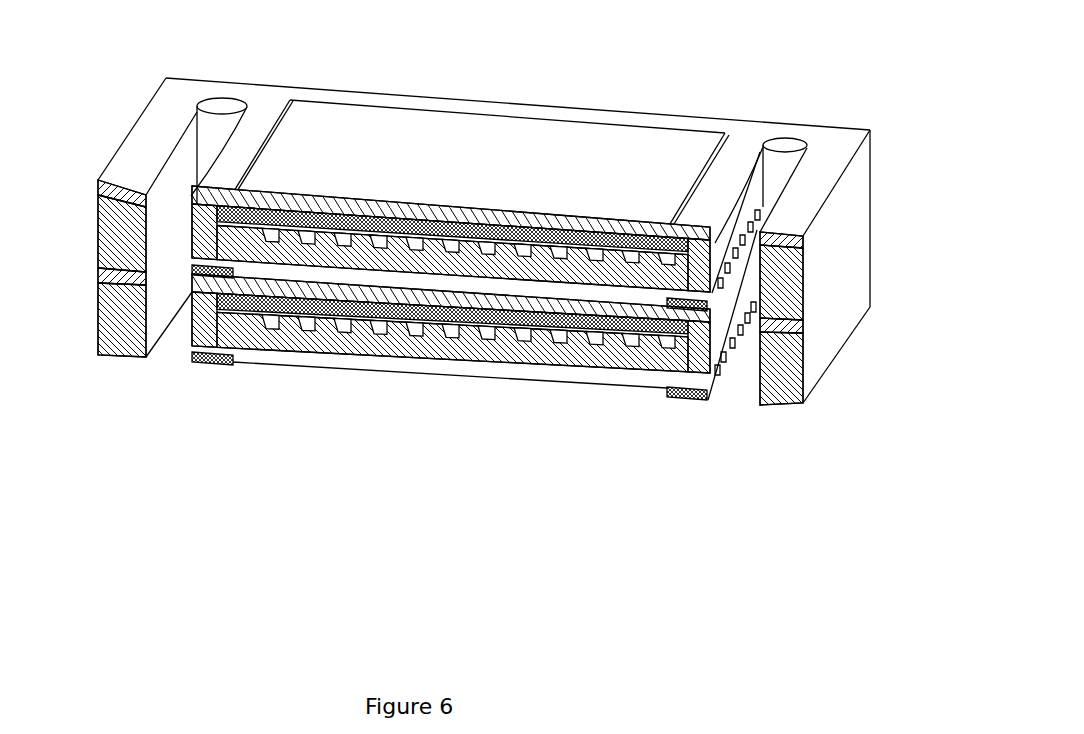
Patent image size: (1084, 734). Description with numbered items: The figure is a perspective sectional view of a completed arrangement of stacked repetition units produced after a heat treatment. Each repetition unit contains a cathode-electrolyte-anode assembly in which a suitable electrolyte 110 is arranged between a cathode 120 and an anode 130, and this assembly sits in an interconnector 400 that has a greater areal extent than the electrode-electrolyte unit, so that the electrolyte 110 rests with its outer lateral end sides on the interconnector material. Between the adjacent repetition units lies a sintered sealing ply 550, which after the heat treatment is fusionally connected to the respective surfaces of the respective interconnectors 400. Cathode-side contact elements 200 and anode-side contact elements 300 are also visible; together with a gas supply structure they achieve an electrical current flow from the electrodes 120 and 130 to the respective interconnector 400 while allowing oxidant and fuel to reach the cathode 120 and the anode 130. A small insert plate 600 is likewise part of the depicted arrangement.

The electrolyte 110 is at (328, 295).
The cathode 120 is at (425, 313).
The anode 130 is at (272, 268).
The cathode/air side contact element 200 is at (472, 320).
The anode/gas side contact element 300 is at (343, 202).
The interconnector 400 is at (822, 340).
The sealing ply in the assembled state 550 is at (783, 318).
The small insert plate 600 is at (683, 383).